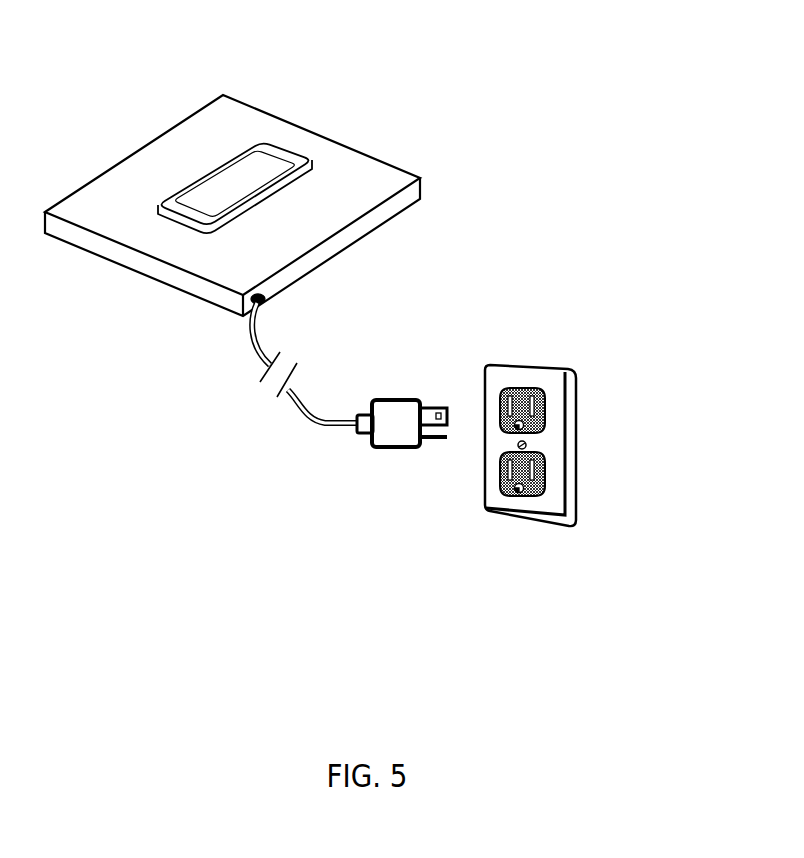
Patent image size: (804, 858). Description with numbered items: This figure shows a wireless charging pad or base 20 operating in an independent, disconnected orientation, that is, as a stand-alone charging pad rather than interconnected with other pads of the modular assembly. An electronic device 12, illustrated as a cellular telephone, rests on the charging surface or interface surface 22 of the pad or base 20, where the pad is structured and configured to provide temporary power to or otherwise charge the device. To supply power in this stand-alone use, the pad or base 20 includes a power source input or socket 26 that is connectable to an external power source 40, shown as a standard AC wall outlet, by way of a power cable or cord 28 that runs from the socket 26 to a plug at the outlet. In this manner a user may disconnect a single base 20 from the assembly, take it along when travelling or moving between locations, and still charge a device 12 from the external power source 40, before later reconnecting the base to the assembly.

The charging pad or base 20 is at (182, 122).
The charging surface or interface surface 22 is at (348, 177).
The electronic device 12 is at (280, 145).
The power source input or socket 26 is at (265, 299).
The power cable or cord 28 is at (298, 410).
The external power source 40 is at (575, 395).